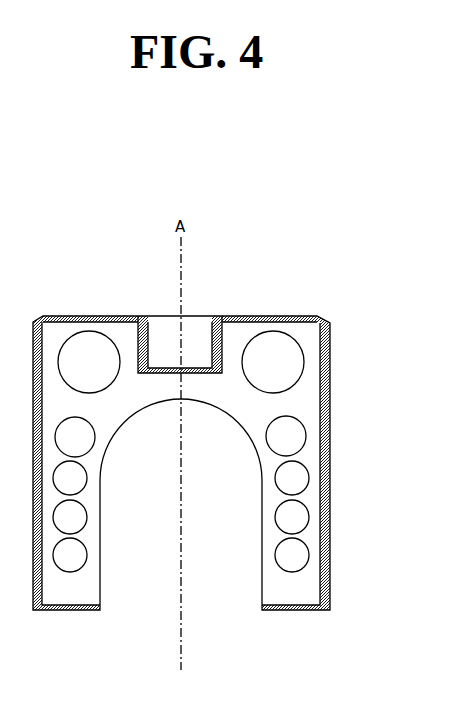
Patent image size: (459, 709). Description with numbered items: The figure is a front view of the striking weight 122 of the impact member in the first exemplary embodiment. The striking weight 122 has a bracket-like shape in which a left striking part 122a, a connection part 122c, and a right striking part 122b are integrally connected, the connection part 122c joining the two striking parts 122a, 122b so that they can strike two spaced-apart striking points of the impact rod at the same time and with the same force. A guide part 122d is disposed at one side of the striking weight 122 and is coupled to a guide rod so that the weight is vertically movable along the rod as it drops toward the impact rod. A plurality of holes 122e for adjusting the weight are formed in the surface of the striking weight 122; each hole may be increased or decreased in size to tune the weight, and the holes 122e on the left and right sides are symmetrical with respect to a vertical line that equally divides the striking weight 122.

The striking weight 122 is at (275, 265).
The left striking part 122a is at (72, 608).
The right striking part 122b is at (292, 608).
The connection part 122c is at (188, 398).
The guide part 122d is at (198, 346).
The holes 122e is at (303, 441).